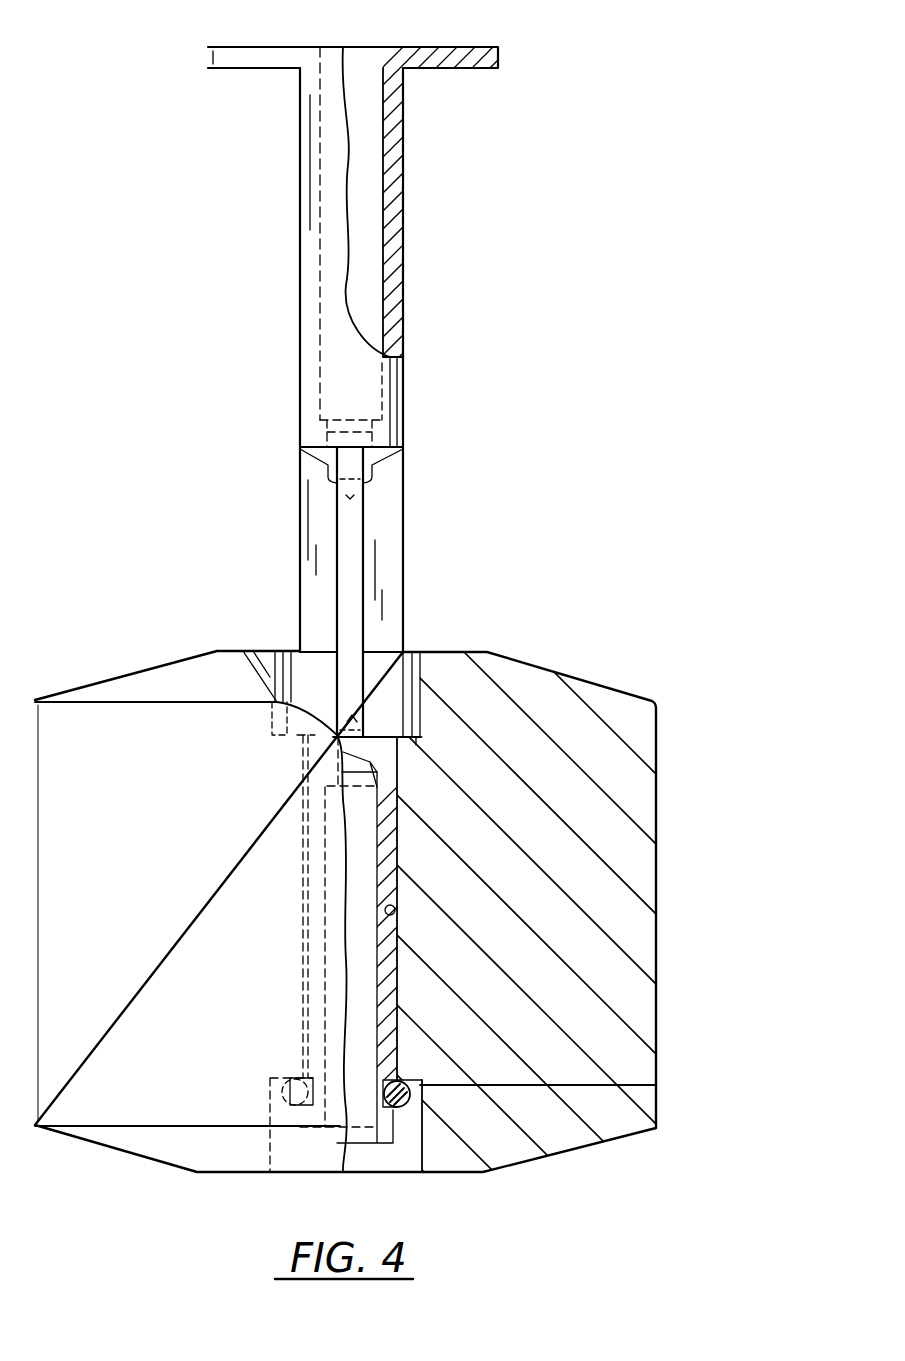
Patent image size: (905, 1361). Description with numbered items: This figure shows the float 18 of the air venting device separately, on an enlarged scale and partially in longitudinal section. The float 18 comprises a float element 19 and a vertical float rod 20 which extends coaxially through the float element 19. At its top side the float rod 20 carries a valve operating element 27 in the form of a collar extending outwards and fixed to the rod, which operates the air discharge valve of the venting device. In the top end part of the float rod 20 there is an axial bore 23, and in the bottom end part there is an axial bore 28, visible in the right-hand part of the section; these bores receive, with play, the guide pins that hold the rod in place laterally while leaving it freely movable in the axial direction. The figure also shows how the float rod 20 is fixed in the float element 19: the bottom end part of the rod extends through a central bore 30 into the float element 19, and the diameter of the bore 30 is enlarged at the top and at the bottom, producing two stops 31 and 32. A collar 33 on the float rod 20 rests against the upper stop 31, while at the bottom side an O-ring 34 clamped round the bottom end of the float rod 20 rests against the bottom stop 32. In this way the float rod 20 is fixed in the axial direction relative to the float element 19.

The float 18 is at (197, 505).
The float element 19 is at (657, 862).
The float rod 20 is at (300, 250).
The axial bore 23 is at (380, 205).
The valve operating element 27 is at (497, 52).
The axial bore 28 is at (367, 1128).
The central bore 30 is at (395, 913).
The stop 31 is at (417, 737).
The stop 32 is at (424, 1084).
The collar 33 is at (396, 690).
The O-ring 34 is at (408, 1108).